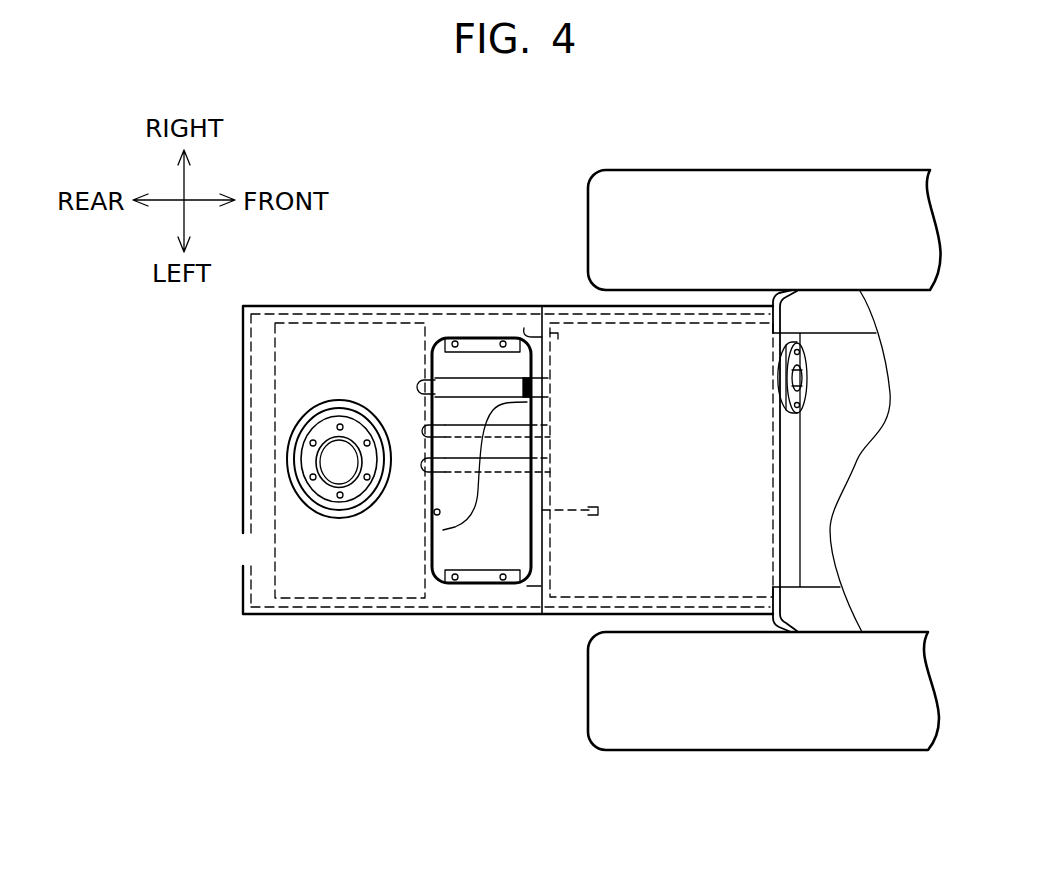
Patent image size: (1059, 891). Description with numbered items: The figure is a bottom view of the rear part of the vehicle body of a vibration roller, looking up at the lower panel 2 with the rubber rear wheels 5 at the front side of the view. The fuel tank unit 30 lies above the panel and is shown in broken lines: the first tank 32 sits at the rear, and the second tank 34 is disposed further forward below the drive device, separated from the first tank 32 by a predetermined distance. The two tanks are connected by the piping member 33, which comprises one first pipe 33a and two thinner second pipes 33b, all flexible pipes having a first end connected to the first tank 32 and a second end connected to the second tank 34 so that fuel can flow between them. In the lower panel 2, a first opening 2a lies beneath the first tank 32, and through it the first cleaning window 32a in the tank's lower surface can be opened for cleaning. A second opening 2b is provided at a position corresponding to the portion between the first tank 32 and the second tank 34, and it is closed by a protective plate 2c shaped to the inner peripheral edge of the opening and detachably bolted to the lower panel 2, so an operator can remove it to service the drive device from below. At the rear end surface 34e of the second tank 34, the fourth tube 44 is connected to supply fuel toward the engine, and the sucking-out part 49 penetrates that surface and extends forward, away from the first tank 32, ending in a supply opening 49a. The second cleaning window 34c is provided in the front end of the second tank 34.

The lower panel 2 is at (242, 490).
The first opening 2a is at (308, 498).
The second opening 2b is at (433, 513).
The protective plate 2c is at (480, 574).
The rear wheel 5 is at (898, 222).
The fuel tank unit 30 is at (252, 548).
The first tank 32 is at (298, 588).
The first cleaning window 32a is at (355, 488).
The piping member 33 is at (427, 401).
The first pipe 33a is at (452, 384).
The second pipes 33b is at (448, 461).
The second tank 34 is at (568, 588).
The second cleaning window 34c is at (807, 372).
The rear end surface 34e is at (527, 586).
The fourth tube 44 is at (538, 333).
The sucking-out part 49 is at (590, 515).
The opening 49a is at (600, 512).